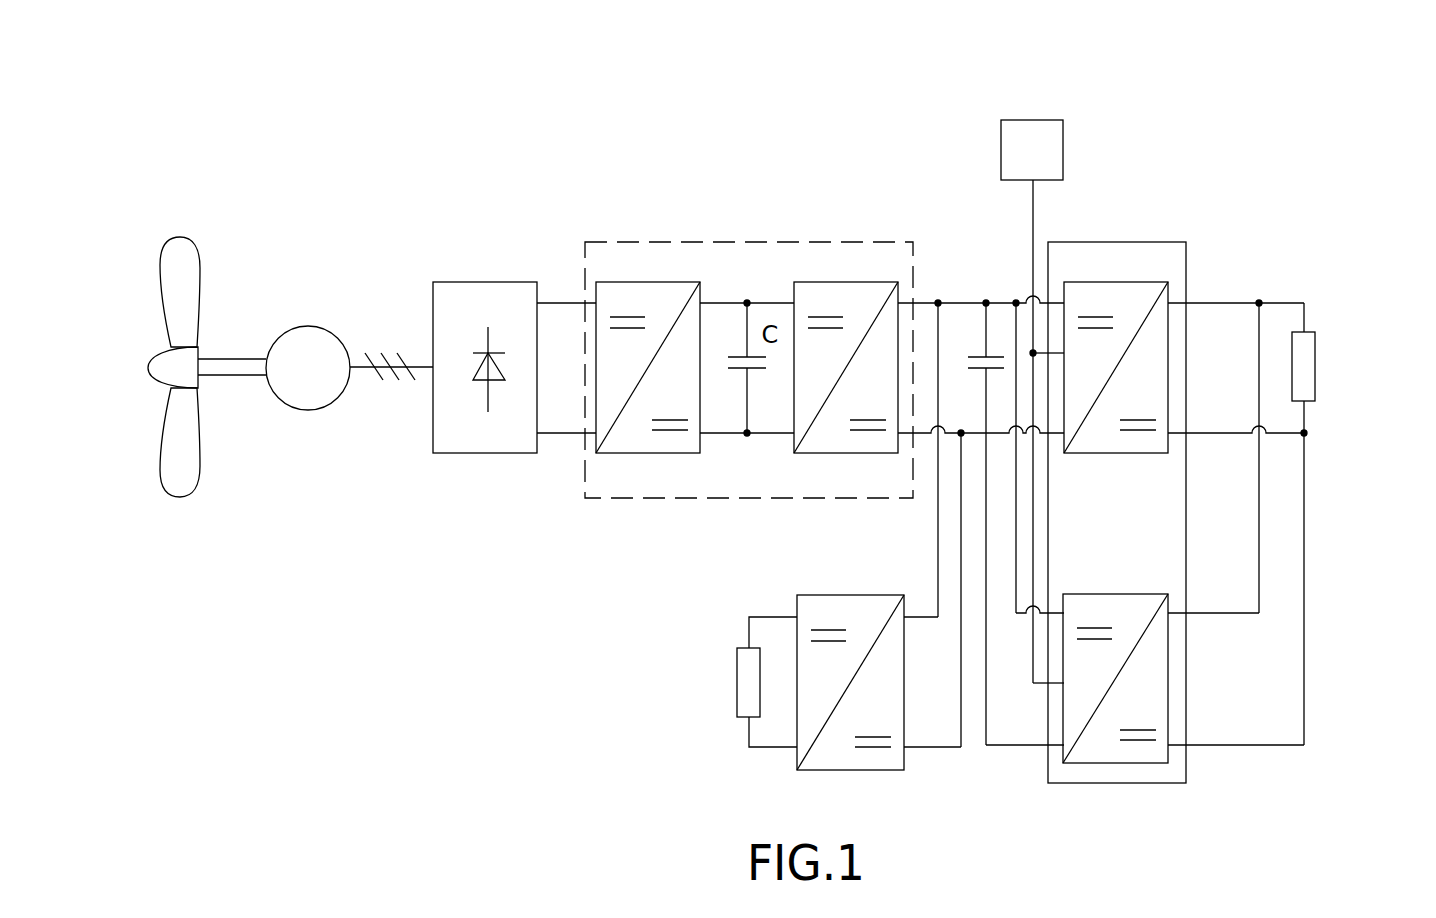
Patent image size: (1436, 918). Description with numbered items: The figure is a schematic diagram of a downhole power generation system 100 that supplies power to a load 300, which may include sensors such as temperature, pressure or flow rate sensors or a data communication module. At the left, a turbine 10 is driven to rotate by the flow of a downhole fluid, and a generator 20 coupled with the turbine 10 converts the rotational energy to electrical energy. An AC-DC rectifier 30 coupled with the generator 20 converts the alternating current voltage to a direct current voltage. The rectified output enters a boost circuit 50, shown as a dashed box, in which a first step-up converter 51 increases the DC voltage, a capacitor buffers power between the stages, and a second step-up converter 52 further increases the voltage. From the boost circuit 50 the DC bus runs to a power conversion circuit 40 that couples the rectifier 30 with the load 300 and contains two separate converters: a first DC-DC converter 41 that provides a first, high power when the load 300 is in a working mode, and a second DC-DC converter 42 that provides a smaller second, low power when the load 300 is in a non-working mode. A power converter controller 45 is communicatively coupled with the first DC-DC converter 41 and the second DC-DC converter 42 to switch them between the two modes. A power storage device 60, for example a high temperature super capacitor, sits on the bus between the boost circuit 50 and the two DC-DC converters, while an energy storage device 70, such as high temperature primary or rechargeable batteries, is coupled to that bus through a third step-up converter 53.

The turbine 10 is at (198, 252).
The generator 20 is at (310, 326).
The AC-DC rectifier 30 is at (468, 282).
The power conversion circuit 40 is at (1105, 242).
The first DC-DC converter 41 is at (1142, 282).
The second DC-DC converter 42 is at (1117, 594).
The power converter controller 45 is at (1052, 120).
The boost circuit 50 is at (785, 242).
The first step-up converter 51 is at (645, 282).
The second step-up converter 52 is at (870, 282).
The third step-up converter 53 is at (845, 595).
The power storage device 60 is at (979, 369).
The energy storage device 70 is at (737, 680).
The downhole power generation system 100 is at (757, 165).
The load 300 is at (1315, 362).